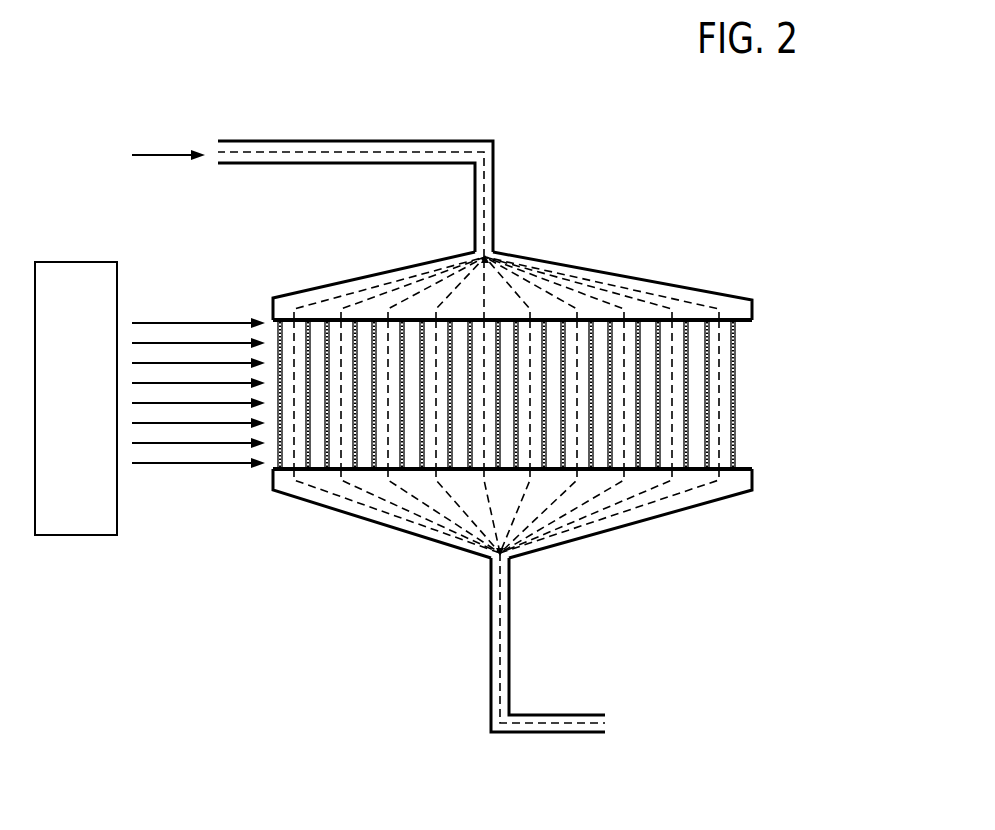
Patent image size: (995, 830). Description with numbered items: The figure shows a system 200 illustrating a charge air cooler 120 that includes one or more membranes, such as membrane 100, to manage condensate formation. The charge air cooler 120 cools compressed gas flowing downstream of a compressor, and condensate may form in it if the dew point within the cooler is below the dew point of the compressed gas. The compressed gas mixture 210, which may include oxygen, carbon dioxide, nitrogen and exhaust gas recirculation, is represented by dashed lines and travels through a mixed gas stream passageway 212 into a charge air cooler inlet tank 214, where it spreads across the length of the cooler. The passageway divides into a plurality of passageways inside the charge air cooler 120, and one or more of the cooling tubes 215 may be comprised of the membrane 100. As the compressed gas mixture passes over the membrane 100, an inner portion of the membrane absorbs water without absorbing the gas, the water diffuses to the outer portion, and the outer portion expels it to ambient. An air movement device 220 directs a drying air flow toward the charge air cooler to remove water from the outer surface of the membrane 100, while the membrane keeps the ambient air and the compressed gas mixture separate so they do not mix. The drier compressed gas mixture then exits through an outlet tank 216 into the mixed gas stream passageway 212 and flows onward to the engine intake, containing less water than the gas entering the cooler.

The system 200 is at (783, 122).
The air movement device 220 is at (91, 409).
The compressed gas mixture 210 is at (146, 155).
The mixed gas stream passageway 212 is at (322, 141).
The charge air cooler inlet tank 214 is at (543, 260).
The outlet tank 216 is at (560, 547).
The charge air cooler 120 is at (742, 300).
The membrane 100 is at (572, 388).
The cooling tubes 215 is at (723, 420).